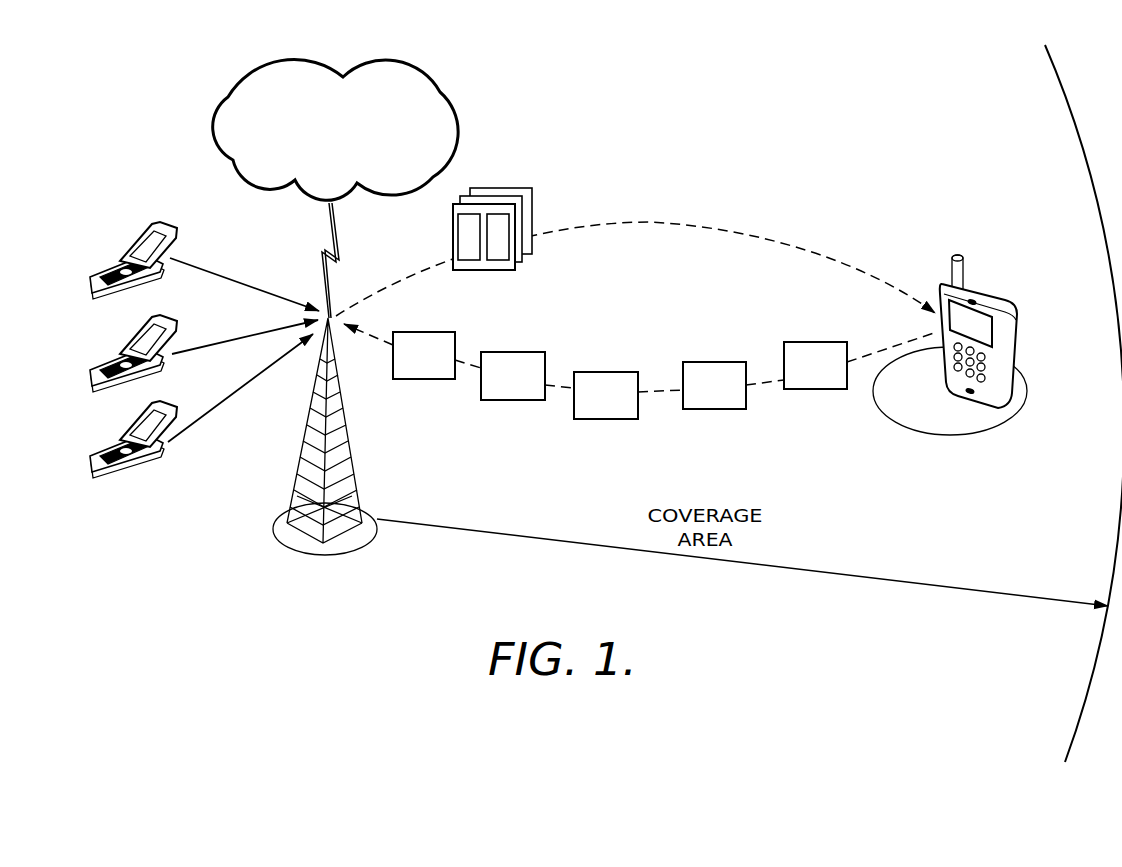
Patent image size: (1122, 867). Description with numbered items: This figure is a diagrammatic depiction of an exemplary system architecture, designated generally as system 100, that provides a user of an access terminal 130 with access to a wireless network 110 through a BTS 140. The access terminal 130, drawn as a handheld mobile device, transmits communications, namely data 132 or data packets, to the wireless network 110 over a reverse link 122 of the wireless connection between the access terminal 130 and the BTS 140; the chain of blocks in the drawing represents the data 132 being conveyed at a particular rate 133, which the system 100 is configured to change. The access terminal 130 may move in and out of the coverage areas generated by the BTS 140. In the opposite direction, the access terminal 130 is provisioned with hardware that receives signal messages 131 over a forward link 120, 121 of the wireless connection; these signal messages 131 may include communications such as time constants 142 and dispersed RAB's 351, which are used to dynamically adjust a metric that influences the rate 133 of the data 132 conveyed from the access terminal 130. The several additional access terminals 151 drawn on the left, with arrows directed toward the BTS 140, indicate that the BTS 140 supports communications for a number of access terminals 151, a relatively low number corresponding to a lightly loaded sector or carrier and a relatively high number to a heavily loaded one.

The system 100 is at (574, 60).
The wireless network 110 is at (350, 177).
The forward link 120 is at (836, 244).
The forward link 121 is at (786, 249).
The reverse link 122 is at (655, 398).
The access terminal 130 is at (1019, 317).
The signal messages 131 is at (491, 236).
The data 132 is at (421, 380).
The rate 133 is at (846, 329).
The BTS 140 is at (365, 545).
The time constants 142 is at (516, 230).
The access terminals 151 is at (237, 282).
The RAB's 351 is at (455, 227).